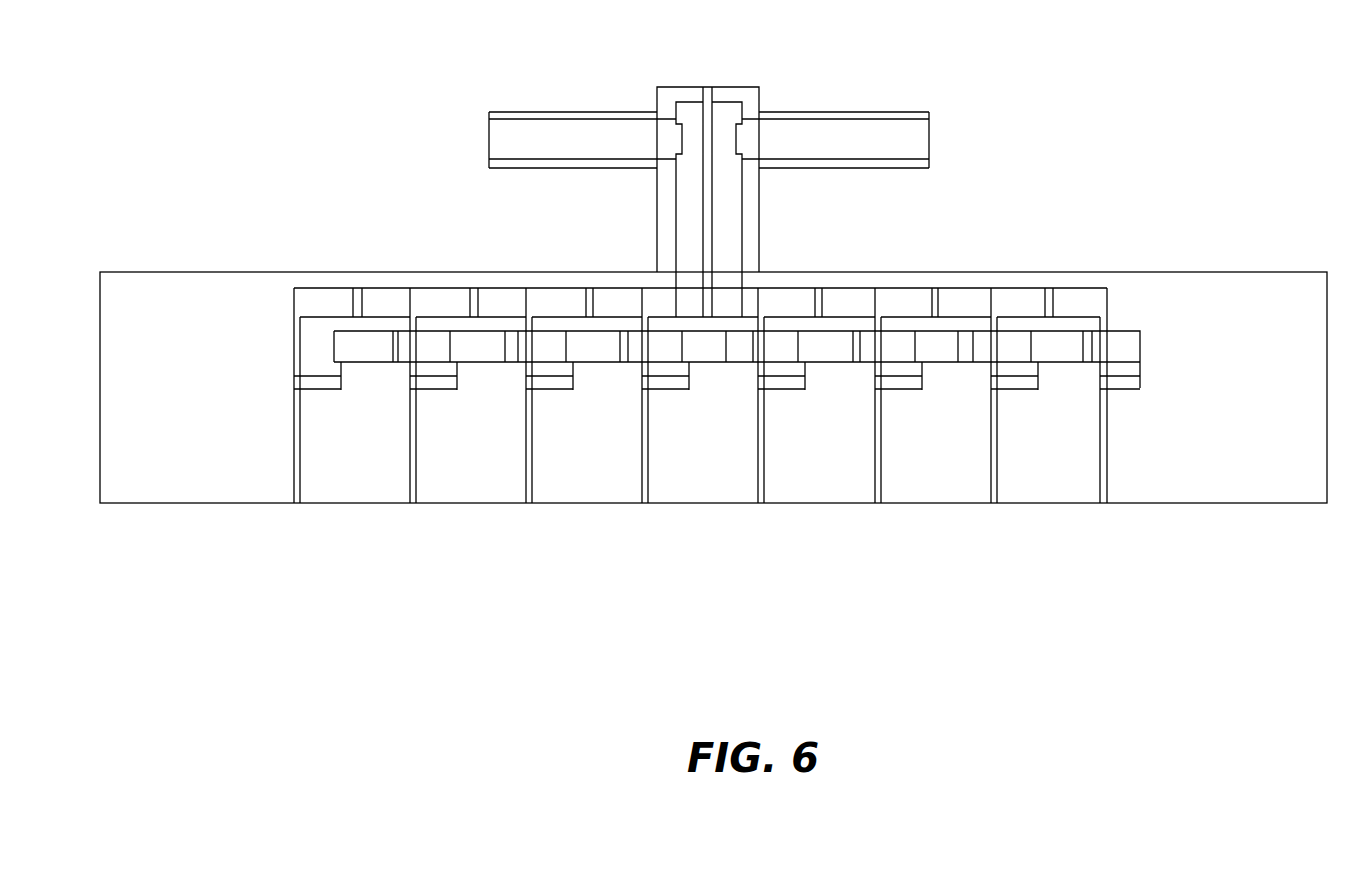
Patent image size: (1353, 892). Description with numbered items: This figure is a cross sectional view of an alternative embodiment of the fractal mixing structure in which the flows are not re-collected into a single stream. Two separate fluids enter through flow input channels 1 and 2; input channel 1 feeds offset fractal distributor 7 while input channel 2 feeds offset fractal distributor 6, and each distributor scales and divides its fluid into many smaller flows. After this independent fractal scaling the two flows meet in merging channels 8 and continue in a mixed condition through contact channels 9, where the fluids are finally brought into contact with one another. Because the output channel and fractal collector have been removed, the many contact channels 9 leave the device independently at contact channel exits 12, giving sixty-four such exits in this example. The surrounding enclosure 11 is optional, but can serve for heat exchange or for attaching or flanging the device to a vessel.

The flow input channel 1 is at (558, 112).
The flow input channel 2 is at (858, 110).
The offset fractal distributor 6 is at (1108, 302).
The offset fractal distributor 7 is at (1142, 340).
The merging channel 8 is at (1125, 392).
The contact channel 9 is at (1098, 450).
The enclosure 11 is at (192, 273).
The contact channel exit 12 is at (301, 503).